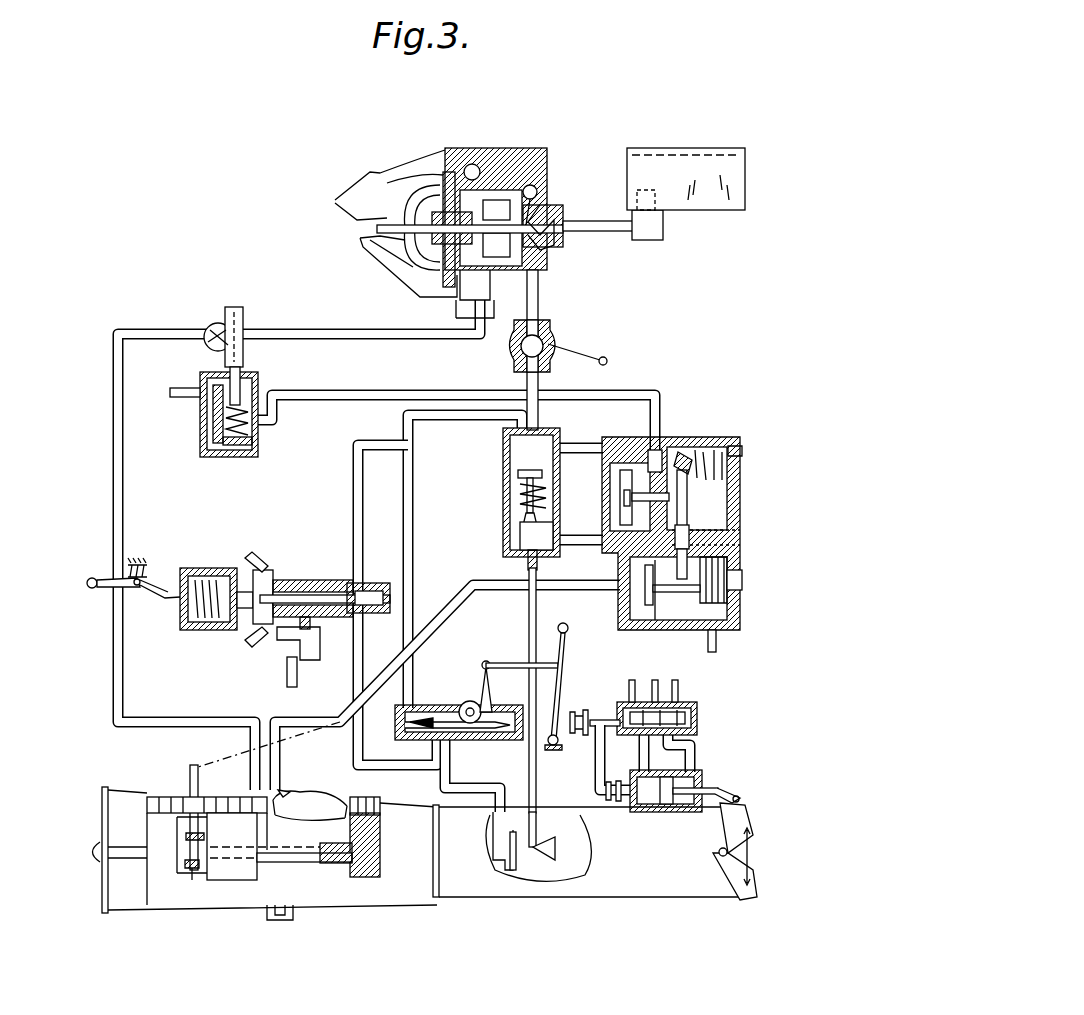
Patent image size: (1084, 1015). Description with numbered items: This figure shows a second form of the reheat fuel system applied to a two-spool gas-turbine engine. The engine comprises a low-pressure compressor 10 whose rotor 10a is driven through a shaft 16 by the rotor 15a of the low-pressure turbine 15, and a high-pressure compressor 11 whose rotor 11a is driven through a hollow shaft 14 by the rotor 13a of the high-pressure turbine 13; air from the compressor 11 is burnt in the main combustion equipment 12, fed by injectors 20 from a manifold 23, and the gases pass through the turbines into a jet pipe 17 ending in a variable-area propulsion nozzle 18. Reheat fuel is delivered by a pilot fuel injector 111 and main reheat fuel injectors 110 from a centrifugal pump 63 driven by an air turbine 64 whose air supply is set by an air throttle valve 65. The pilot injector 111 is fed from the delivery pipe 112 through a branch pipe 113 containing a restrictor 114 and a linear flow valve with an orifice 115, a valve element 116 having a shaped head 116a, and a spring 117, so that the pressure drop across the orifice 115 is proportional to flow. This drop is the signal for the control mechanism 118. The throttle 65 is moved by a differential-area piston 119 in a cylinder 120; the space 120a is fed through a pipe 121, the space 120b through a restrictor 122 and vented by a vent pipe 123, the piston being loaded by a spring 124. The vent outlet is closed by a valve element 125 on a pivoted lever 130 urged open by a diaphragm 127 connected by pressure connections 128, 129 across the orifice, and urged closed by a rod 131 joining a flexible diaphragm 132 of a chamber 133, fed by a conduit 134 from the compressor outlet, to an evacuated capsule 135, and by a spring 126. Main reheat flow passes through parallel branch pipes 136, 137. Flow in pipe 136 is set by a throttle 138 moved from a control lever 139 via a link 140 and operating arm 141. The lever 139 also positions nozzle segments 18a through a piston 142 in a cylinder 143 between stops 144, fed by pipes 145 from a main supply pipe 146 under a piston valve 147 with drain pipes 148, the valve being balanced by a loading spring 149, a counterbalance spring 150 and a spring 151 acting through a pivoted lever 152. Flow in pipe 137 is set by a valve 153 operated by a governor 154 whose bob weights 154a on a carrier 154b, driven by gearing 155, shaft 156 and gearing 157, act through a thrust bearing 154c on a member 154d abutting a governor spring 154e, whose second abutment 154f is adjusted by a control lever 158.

The low-pressure compressor 10 is at (150, 800).
The rotor of the low-pressure compressor 10a is at (150, 870).
The high-pressure compressor 11 is at (225, 797).
The rotor of the high-pressure compressor 11a is at (235, 875).
The main combustion equipment 12 is at (308, 790).
The high-pressure turbine 13 is at (355, 797).
The rotor of the high-pressure turbine 13a is at (370, 880).
The hollow shaft 14 is at (300, 865).
The low-pressure turbine 15 is at (380, 802).
The rotor of the low-pressure turbine 15a is at (437, 880).
The shaft 16 is at (340, 865).
The jet pipe 17 is at (480, 890).
The variable-area propulsion nozzle 18 is at (720, 852).
The nozzle segments 18a is at (740, 800).
The injectors 20 is at (290, 795).
The manifold 23 is at (278, 922).
The centrifugal pump 63 is at (545, 210).
The air turbine 64 is at (452, 170).
The air throttle valve 65 is at (218, 323).
The main reheat fuel injectors 110 is at (512, 875).
The pilot fuel injector 111 is at (550, 860).
The delivery pipe 112 is at (540, 288).
The branch pipe 113 is at (528, 762).
The restrictor 114 is at (528, 562).
The orifice 115 is at (522, 518).
The valve element 116 is at (518, 482).
The shaped head 116a is at (520, 535).
The spring 117 is at (520, 498).
The control mechanism 118 is at (706, 450).
The differential-area piston 119 is at (305, 392).
The cylinder 120 is at (275, 418).
The cylinder space on the smaller-area side 120a is at (245, 390).
The cylinder space on the other side 120b is at (248, 438).
The pipe 121 is at (195, 392).
The restrictor 122 is at (210, 445).
The vent pipe 123 is at (440, 382).
The spring 124 is at (215, 415).
The valve element 125 is at (680, 450).
The spring 126 is at (712, 447).
The diaphragm 127 is at (624, 480).
The pressure connection 128 is at (575, 443).
The pressure connection 129 is at (576, 545).
The pivoted lever 130 is at (706, 524).
The rod 131 is at (702, 584).
The flexible diaphragm 132 is at (650, 612).
The chamber 133 is at (640, 595).
The conduit 134 is at (470, 590).
The evacuated capsule 135 is at (730, 641).
The first branch pipe 136 is at (414, 455).
The second branch pipe 137 is at (355, 495).
The throttle 138 is at (440, 710).
The control lever 139 is at (560, 692).
The link 140 is at (510, 663).
The operating arm 141 is at (483, 665).
The piston 142 is at (612, 780).
The cylinder 143 is at (688, 810).
The stops 144 is at (650, 810).
The pipes 145 is at (690, 760).
The main supply pipe 146 is at (632, 680).
The piston valve 147 is at (693, 700).
The drain pipes 148 is at (652, 686).
The loading spring 149 is at (580, 735).
The counterbalance spring 150 is at (690, 700).
The spring 151 is at (612, 805).
The pivoted lever 152 is at (598, 775).
The valve 153 is at (365, 590).
The governor 154 is at (268, 570).
The bob weights 154a is at (262, 555).
The carrier 154b is at (300, 580).
The thrust bearing 154c is at (243, 592).
The member 154d is at (218, 630).
The governor spring 154e is at (200, 625).
The second abutment 154f is at (175, 575).
The gearing 155 is at (312, 650).
The shaft 156 is at (287, 672).
The gearing 157 is at (192, 880).
The control lever 158 is at (125, 600).